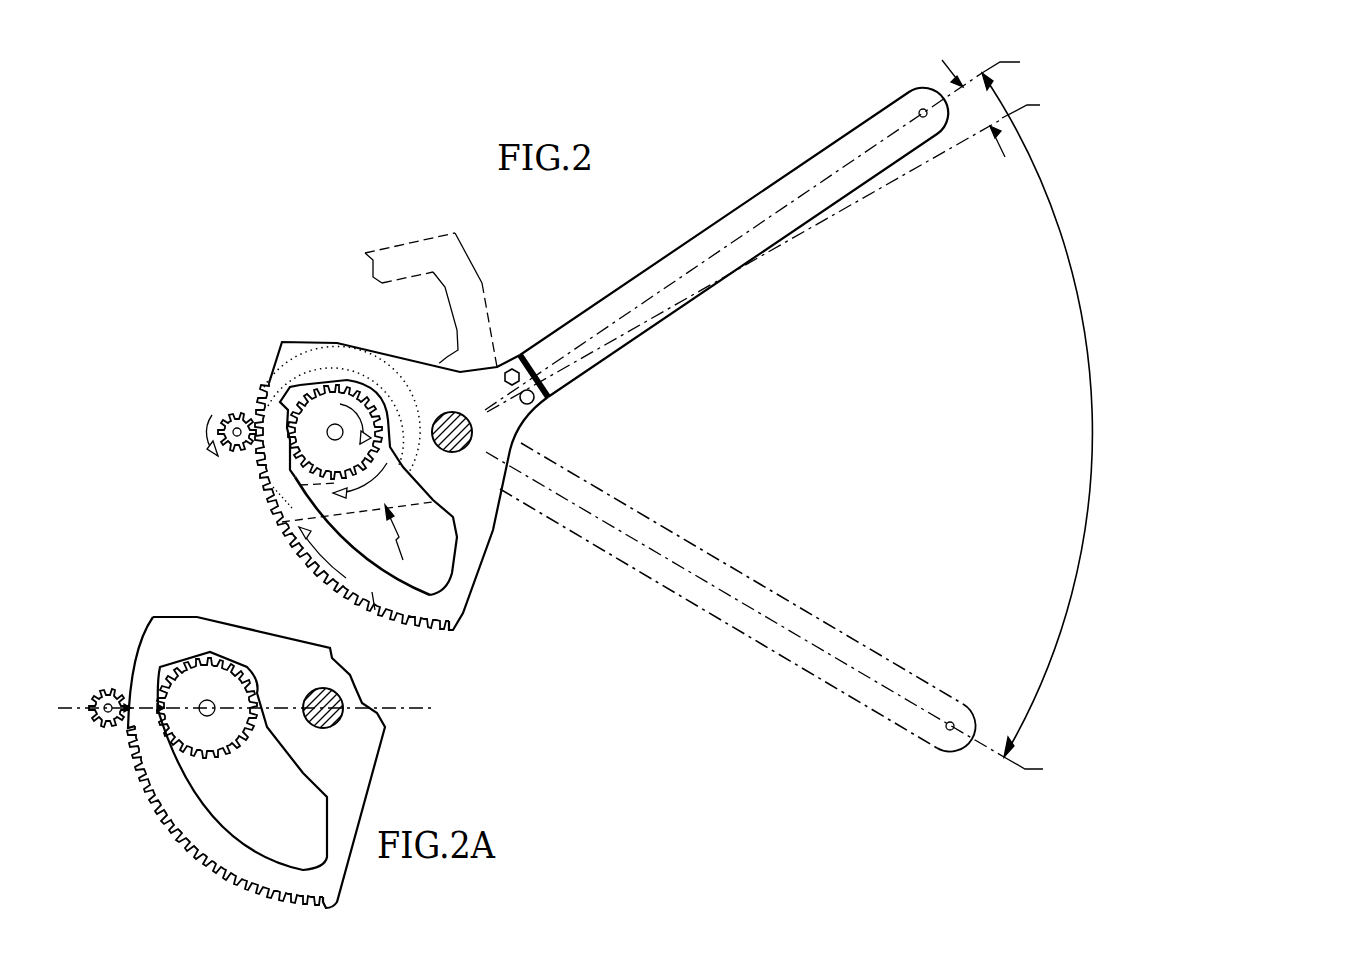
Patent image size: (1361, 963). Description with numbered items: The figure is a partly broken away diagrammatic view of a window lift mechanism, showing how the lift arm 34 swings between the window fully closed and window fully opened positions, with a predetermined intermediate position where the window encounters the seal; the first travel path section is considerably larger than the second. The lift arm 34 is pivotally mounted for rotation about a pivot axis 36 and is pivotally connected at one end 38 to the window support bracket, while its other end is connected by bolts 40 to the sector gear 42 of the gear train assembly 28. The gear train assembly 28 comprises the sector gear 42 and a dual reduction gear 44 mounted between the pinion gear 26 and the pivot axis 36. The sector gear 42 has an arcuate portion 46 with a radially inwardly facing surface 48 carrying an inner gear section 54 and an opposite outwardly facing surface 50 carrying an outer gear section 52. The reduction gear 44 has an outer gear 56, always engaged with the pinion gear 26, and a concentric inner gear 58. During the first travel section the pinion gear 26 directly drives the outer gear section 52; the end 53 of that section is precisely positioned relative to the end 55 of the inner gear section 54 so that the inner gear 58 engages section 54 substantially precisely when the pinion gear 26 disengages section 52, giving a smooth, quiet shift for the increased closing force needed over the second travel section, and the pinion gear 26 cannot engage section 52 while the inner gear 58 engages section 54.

In FIG. 2, the pinion gear 26 is at (234, 404).
In FIG. 2A, the pinion gear 26 is at (110, 686).
In FIG. 2, the gear train assembly 28 is at (328, 308).
In FIG. 2, the lift arm 34 is at (842, 152).
In FIG. 2, the pivot axis 36 is at (463, 447).
In FIG. 2A, the pivot axis 36 is at (337, 720).
In FIG. 2, the end of lift arm 38 is at (923, 108).
In FIG. 2, the bolts 40 is at (519, 394).
In FIG. 2, the sector gear 42 is at (467, 592).
In FIG. 2A, the sector gear 42 is at (342, 863).
In FIG. 2, the dual reduction gear 44 is at (405, 541).
In FIG. 2, the arcuate portion 46 is at (373, 597).
In FIG. 2, the radially inwardly facing surface 48 is at (385, 580).
In FIG. 2, the outwardly facing surface 50 is at (277, 356).
In FIG. 2, the outer gear section 52 is at (327, 580).
In FIG. 2A, the outer gear section 52 is at (197, 858).
In FIG. 2A, the end of outer gear section 53 is at (122, 732).
In FIG. 2, the inner gear section 54 is at (306, 391).
In FIG. 2A, the inner gear section 54 is at (174, 663).
In FIG. 2A, the end of inner gear section 55 is at (160, 704).
In FIG. 2, the outer gear 56 is at (393, 490).
In FIG. 2, the inner gear 58 is at (343, 462).
In FIG. 2A, the inner gear 58 is at (218, 742).